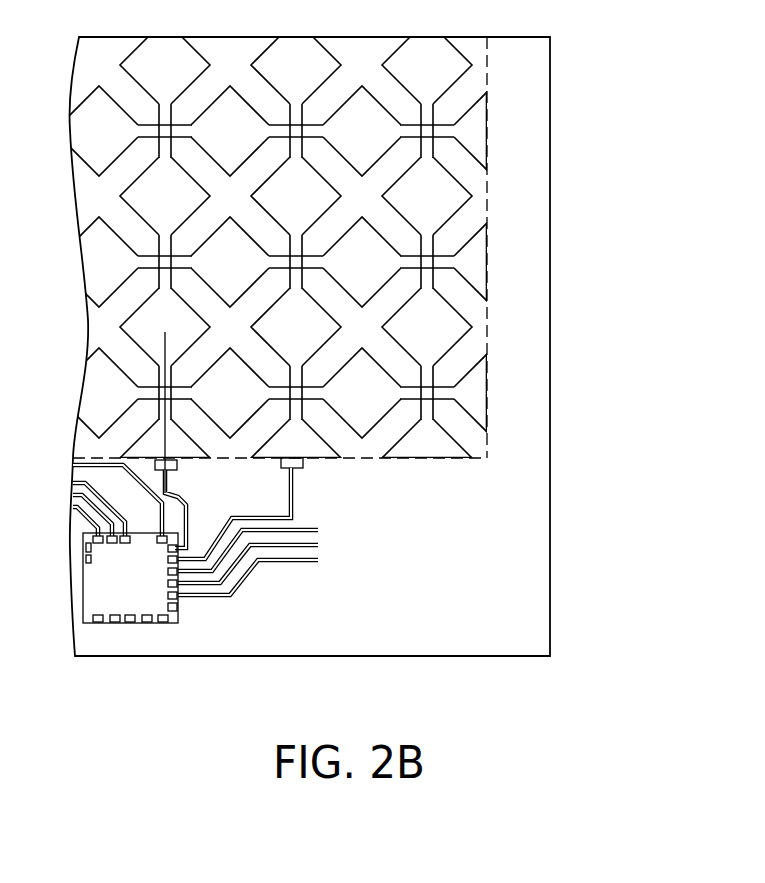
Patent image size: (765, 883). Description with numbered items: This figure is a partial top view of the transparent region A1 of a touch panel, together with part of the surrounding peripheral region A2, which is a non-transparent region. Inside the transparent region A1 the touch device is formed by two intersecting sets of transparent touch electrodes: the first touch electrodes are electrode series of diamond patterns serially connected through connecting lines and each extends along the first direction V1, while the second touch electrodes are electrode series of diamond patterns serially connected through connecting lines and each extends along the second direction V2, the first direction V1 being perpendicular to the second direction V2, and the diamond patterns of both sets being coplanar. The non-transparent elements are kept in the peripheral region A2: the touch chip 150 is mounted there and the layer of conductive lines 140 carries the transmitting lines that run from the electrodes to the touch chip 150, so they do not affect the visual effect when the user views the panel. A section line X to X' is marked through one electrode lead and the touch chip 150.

The transparent region A1 is at (488, 64).
The peripheral region A2 is at (523, 588).
The first direction V1 is at (417, 248).
The second direction V2 is at (440, 118).
The section line X is at (176, 396).
The section line X' is at (153, 575).
The layer of conductive lines 140 is at (240, 580).
The touch chip 150 is at (128, 623).